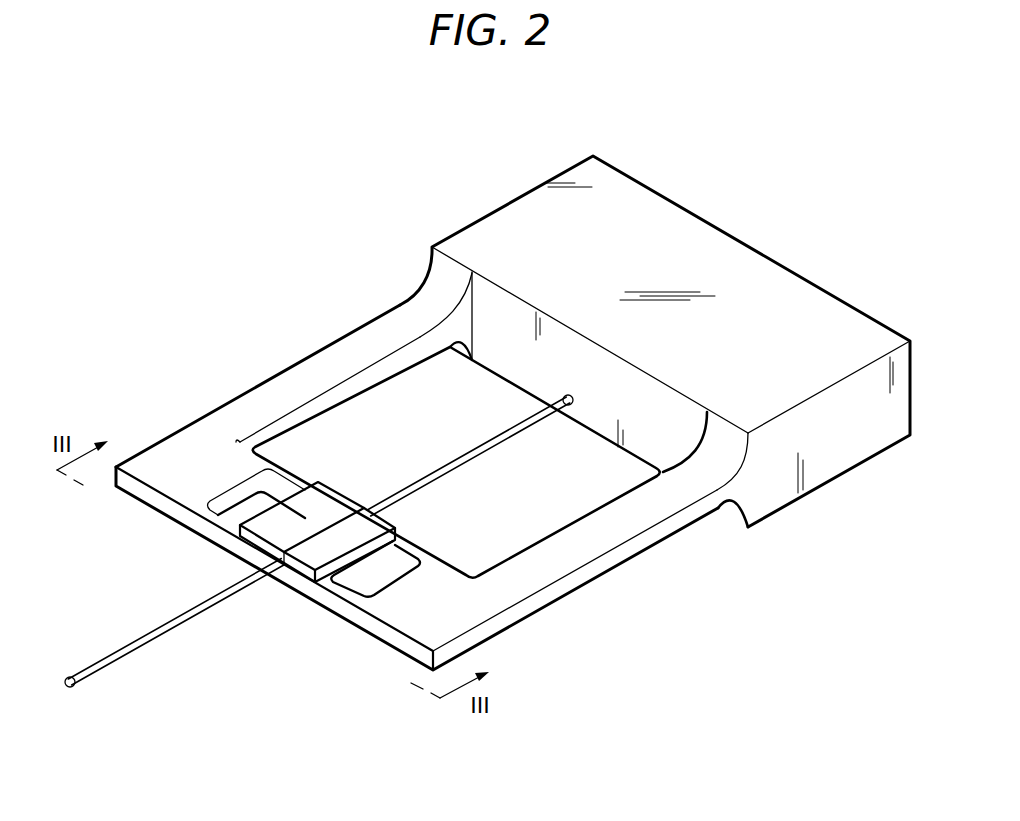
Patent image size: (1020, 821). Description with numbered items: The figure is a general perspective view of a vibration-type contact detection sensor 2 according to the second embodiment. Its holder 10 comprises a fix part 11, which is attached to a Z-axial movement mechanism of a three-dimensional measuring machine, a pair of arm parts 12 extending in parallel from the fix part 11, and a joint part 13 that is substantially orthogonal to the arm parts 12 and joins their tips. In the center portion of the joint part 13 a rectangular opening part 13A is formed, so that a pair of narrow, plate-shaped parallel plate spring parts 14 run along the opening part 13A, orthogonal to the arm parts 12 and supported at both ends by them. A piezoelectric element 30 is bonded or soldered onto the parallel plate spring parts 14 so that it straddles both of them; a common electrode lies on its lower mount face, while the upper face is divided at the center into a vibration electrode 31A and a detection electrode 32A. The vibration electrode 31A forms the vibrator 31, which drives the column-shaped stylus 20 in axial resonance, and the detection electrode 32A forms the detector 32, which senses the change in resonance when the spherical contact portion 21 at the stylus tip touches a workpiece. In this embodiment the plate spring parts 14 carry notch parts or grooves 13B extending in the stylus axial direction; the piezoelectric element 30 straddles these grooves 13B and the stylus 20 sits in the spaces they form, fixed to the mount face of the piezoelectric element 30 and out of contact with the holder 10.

The vibration-type contact detection sensor 2 is at (707, 167).
The holder 10 is at (842, 327).
The fix part 11 is at (767, 275).
The arm parts 12 is at (370, 332).
The joint part 13 is at (165, 478).
The rectangular opening part 13A is at (368, 578).
The notch parts or grooves 13B is at (283, 566).
The parallel plate spring parts 14 is at (295, 495).
The stylus 20 is at (156, 656).
The spherical contact portion 21 is at (70, 690).
The piezoelectric element 30 is at (367, 484).
The vibrator 31 is at (277, 527).
The vibration electrode 31A is at (323, 493).
The detector 32 is at (367, 540).
The detection electrode 32A is at (387, 528).